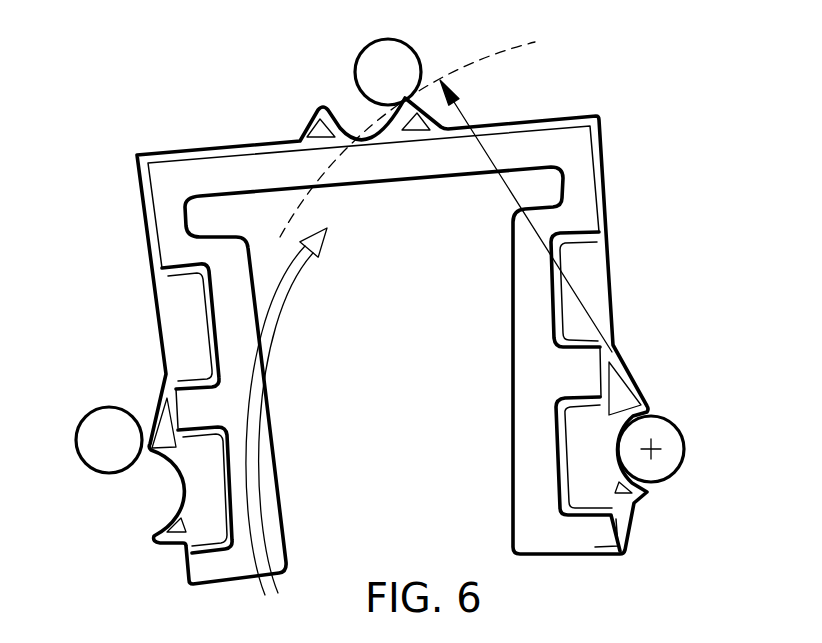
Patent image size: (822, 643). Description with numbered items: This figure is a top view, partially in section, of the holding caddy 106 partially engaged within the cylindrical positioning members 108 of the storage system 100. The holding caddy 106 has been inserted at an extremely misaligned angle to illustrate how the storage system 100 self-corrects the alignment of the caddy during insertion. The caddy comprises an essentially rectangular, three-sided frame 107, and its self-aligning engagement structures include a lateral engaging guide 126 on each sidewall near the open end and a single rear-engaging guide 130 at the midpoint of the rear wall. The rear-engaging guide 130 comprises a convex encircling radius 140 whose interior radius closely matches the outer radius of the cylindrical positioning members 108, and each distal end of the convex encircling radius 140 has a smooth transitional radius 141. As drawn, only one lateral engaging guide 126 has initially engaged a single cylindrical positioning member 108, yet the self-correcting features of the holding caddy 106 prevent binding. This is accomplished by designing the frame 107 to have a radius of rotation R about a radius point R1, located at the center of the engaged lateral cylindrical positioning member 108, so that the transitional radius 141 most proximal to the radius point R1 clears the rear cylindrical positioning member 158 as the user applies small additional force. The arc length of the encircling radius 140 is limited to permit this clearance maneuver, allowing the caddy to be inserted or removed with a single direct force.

The storage system 100 is at (70, 134).
The holding caddy 106 is at (644, 259).
The frame 107 is at (490, 500).
The cylindrical positioning members 108 is at (345, 40).
The lateral engaging guide 126 is at (640, 500).
The rear-engaging guide 130 is at (282, 119).
The convex encircling radius 140 is at (354, 130).
The transitional radius 141 is at (437, 78).
The rear cylindrical positioning member 158 is at (393, 40).
The radius of rotation R is at (584, 290).
The radius point R1 is at (651, 449).